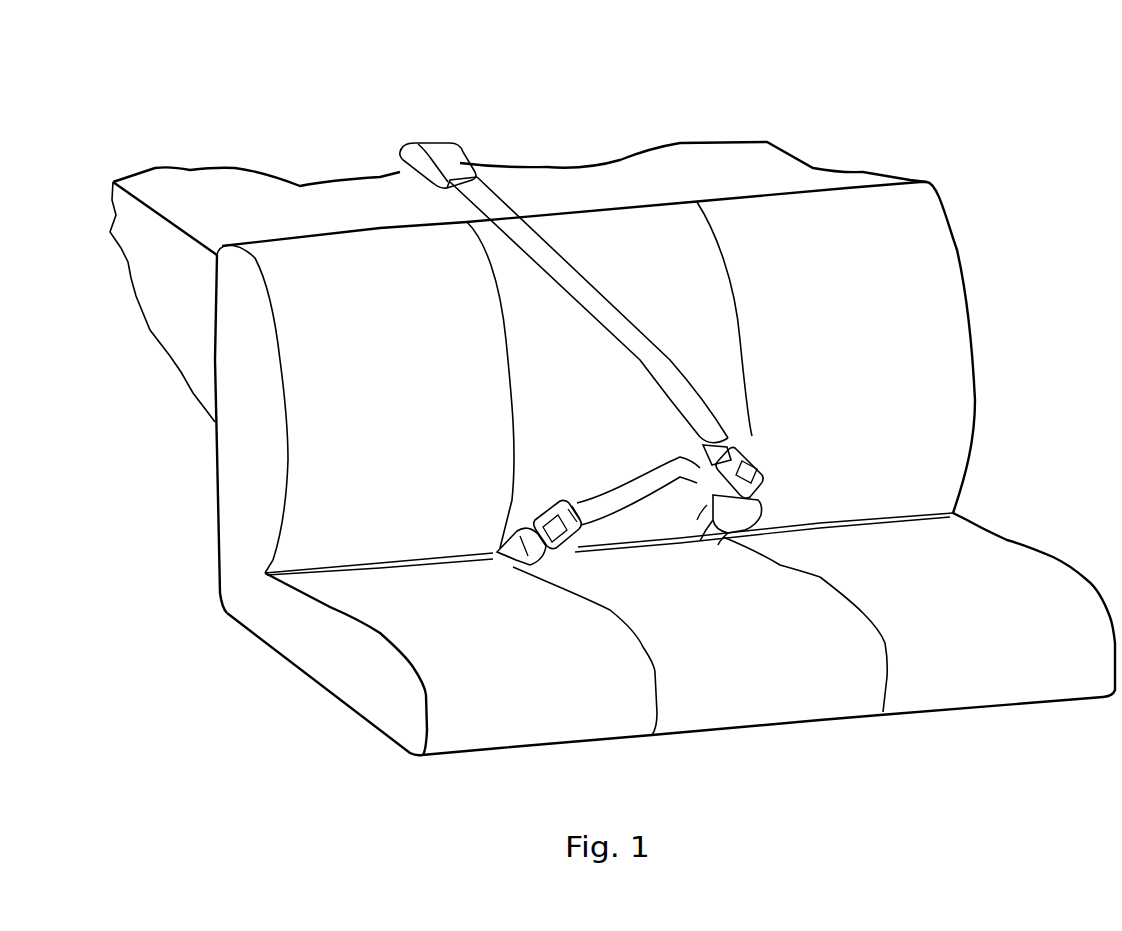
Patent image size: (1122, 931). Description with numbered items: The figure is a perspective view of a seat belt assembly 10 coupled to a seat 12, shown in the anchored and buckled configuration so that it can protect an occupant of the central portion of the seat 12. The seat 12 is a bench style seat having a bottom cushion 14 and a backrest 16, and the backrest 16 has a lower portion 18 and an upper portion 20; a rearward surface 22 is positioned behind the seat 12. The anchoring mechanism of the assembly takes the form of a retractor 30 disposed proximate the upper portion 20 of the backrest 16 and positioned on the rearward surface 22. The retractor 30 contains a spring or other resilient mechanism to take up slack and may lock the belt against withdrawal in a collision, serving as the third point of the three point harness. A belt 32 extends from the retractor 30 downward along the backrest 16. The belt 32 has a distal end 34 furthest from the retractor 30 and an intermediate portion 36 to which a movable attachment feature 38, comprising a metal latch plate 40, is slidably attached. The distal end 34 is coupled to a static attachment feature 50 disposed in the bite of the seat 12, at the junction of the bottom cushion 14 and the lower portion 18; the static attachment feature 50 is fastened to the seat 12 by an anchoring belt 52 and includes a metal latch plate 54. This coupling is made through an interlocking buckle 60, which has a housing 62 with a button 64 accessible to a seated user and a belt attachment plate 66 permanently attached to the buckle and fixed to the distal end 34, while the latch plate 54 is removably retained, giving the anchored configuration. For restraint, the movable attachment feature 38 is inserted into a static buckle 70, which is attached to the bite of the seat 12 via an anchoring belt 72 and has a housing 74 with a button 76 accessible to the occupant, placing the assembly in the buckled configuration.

The seat belt assembly 10 is at (574, 141).
The seat 12 is at (593, 397).
The bottom cushion 14 is at (607, 634).
The backrest 16 is at (203, 439).
The lower portion 18 is at (232, 555).
The upper portion 20 is at (225, 312).
The rearward surface 22 is at (313, 200).
The retractor 30 is at (432, 143).
The belt 32 is at (597, 273).
The distal end 34 is at (602, 517).
The intermediate portion 36 is at (653, 335).
The movable attachment feature 38 is at (737, 440).
The metal latch plate 40 is at (707, 505).
The static attachment feature 50 is at (477, 593).
The anchoring belt 52 is at (498, 560).
The metal latch plate 54 is at (513, 533).
The interlocking buckle 60 is at (534, 454).
The housing 62 is at (543, 508).
The button 64 is at (552, 530).
The belt attachment plate 66 is at (572, 503).
The static buckle 70 is at (784, 534).
The anchoring belt 72 is at (755, 515).
The housing 74 is at (713, 527).
The button 76 is at (762, 478).